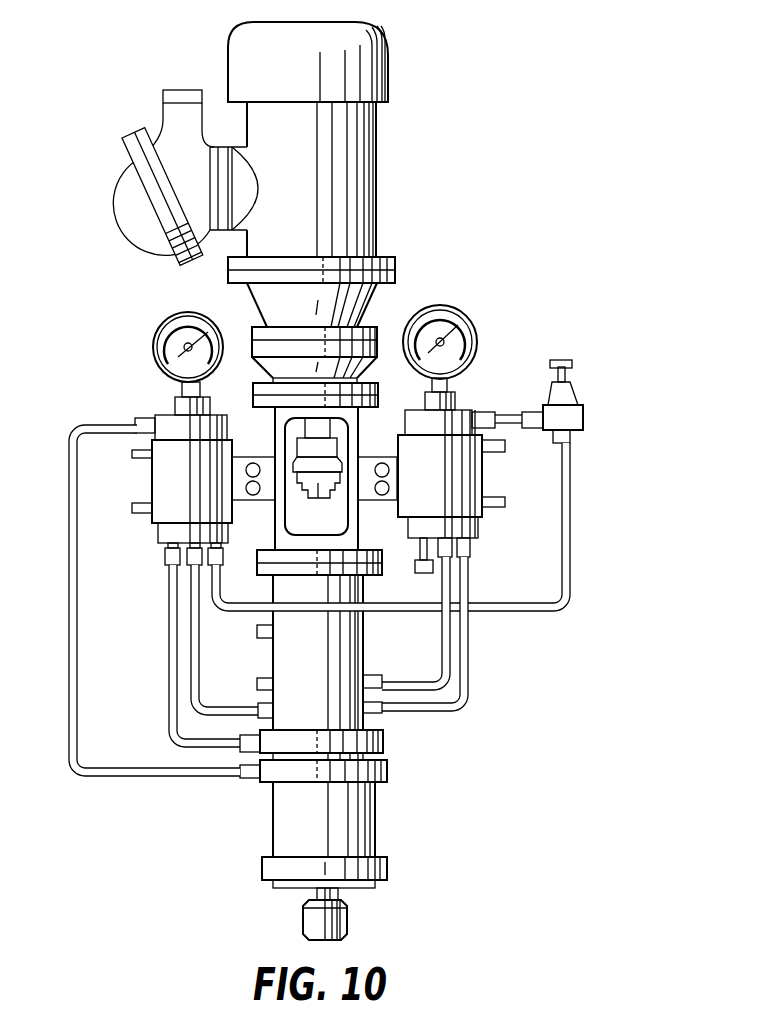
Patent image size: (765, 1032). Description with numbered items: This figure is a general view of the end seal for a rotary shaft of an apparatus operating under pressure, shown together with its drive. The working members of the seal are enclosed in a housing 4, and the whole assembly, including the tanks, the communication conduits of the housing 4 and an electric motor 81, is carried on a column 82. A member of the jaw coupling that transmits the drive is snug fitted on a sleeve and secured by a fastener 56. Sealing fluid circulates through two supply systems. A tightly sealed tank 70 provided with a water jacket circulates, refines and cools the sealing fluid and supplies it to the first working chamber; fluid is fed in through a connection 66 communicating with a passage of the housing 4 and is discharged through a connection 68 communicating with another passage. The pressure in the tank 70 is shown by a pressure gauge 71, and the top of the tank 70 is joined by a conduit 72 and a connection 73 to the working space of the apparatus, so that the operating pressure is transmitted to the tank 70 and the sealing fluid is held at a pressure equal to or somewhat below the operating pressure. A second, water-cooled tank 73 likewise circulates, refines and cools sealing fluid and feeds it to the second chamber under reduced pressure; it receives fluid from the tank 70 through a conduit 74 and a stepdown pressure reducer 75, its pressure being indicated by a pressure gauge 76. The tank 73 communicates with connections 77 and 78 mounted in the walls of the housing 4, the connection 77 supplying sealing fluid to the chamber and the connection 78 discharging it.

The housing 4 is at (350, 640).
The fastener 56 is at (319, 486).
The connection 66 is at (262, 707).
The connection 68 is at (254, 742).
The tightly sealed tank 70 is at (157, 481).
The pressure gauge 71 is at (158, 332).
The conduit 72 is at (68, 556).
The water-cooled tank 73 is at (476, 483).
The conduit 74 is at (547, 609).
The stepdown pressure reducer 75 is at (583, 418).
The pressure gauge 76 is at (452, 320).
The connection 77 is at (382, 678).
The connection 78 is at (380, 711).
The electric motor 81 is at (367, 176).
The column 82 is at (350, 525).